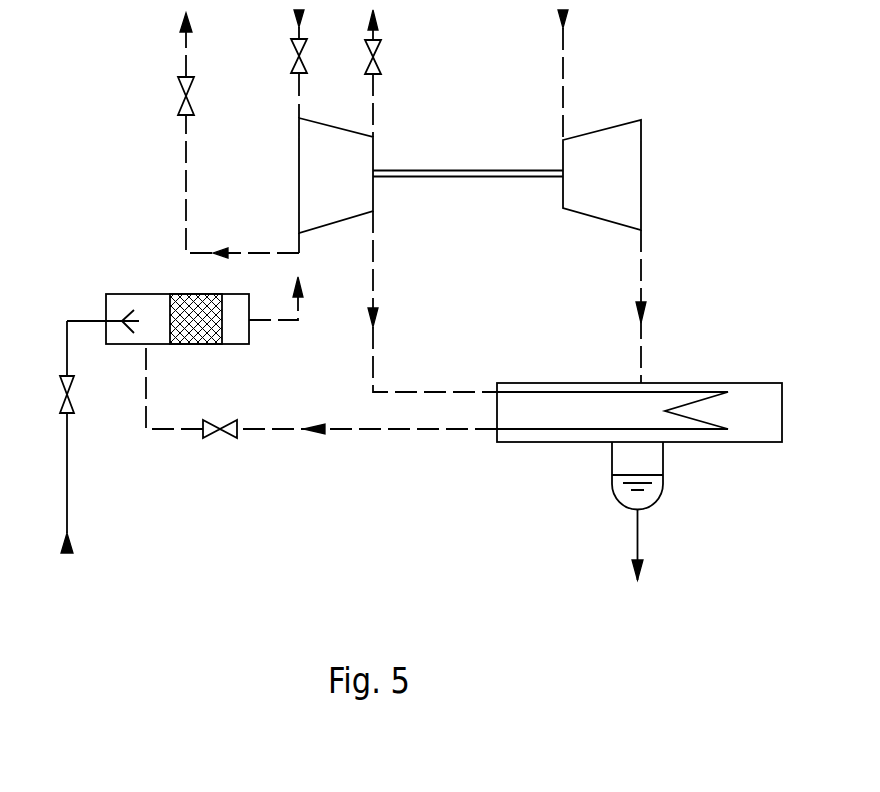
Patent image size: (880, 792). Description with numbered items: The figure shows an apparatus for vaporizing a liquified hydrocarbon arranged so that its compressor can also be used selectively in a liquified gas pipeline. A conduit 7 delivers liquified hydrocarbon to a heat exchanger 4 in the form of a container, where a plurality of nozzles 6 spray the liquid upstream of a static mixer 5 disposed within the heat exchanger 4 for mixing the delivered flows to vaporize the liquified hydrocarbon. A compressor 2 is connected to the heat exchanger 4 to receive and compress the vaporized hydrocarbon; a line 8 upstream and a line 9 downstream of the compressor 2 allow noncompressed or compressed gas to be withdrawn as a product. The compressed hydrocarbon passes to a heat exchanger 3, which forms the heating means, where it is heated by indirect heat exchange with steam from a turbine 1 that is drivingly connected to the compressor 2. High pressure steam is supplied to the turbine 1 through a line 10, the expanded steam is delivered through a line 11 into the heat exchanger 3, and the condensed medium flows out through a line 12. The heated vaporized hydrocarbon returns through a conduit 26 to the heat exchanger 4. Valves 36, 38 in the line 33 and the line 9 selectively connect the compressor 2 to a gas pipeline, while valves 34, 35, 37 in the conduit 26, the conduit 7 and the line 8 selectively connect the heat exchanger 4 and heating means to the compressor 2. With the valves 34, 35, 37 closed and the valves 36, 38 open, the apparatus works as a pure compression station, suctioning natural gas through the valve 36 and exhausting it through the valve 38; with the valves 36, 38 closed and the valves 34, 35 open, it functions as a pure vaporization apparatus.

The turbine 1 is at (642, 177).
The compressor 2 is at (298, 171).
The heat exchanger 3 is at (540, 444).
The heat exchanger 4 is at (235, 346).
The static mixer 5 is at (192, 346).
The nozzles 6 is at (123, 317).
The conduit 7 is at (68, 515).
The line 8 is at (186, 190).
The line 9 is at (375, 108).
The line 10 is at (565, 77).
The line 11 is at (642, 282).
The line 12 is at (639, 548).
The conduit 26 is at (279, 433).
The line 33 is at (298, 96).
The valve 34 is at (220, 438).
The valve 35 is at (73, 398).
The valve 36 is at (293, 58).
The valve 37 is at (178, 95).
The valve 38 is at (379, 57).